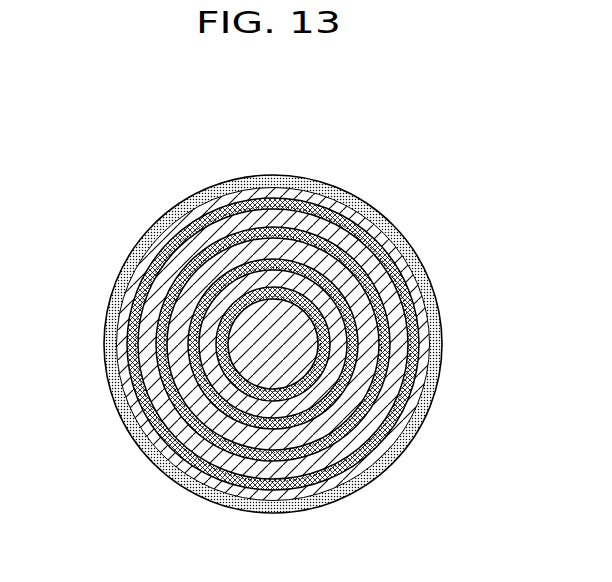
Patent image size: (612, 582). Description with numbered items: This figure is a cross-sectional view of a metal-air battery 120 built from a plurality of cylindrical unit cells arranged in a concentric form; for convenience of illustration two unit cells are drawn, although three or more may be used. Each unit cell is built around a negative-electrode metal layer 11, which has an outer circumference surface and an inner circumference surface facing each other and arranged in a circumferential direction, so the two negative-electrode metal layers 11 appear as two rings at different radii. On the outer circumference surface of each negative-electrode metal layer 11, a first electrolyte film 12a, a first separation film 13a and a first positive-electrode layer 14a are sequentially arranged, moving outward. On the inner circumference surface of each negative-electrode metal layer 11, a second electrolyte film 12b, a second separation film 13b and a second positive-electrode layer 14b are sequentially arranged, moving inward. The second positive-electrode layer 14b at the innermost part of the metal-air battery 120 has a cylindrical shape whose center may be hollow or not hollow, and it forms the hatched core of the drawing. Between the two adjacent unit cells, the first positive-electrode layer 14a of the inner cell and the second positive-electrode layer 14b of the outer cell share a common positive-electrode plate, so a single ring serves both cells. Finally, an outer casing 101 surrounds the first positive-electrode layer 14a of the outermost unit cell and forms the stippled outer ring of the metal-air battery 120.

The metal-air battery 120 is at (295, 332).
The outer casing 101 is at (190, 196).
The negative-electrode metal layer 11 is at (418, 288).
The first electrolyte film 12a is at (385, 443).
The second electrolyte film 12b is at (410, 272).
The first separation film 13a is at (383, 465).
The second separation film 13b is at (368, 236).
The first positive-electrode layer 14a is at (363, 493).
The second positive-electrode layer 14b is at (352, 224).